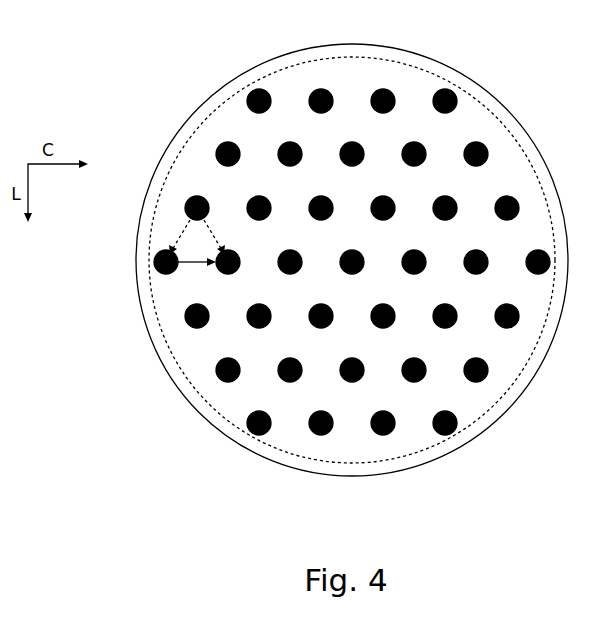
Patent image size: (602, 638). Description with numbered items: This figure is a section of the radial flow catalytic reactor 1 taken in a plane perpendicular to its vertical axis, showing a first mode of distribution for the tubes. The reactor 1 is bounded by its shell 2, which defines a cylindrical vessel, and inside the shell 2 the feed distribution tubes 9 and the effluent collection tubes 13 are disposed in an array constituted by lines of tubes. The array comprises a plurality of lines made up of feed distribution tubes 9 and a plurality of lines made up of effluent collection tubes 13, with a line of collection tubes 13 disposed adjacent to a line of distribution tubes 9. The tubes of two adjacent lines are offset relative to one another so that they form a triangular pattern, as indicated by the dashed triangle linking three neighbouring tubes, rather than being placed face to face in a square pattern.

The radial flow catalytic reactor 1 is at (128, 314).
The shell 2 is at (188, 119).
The feed distribution tubes 9 is at (332, 90).
The effluent collection tubes 13 is at (475, 142).